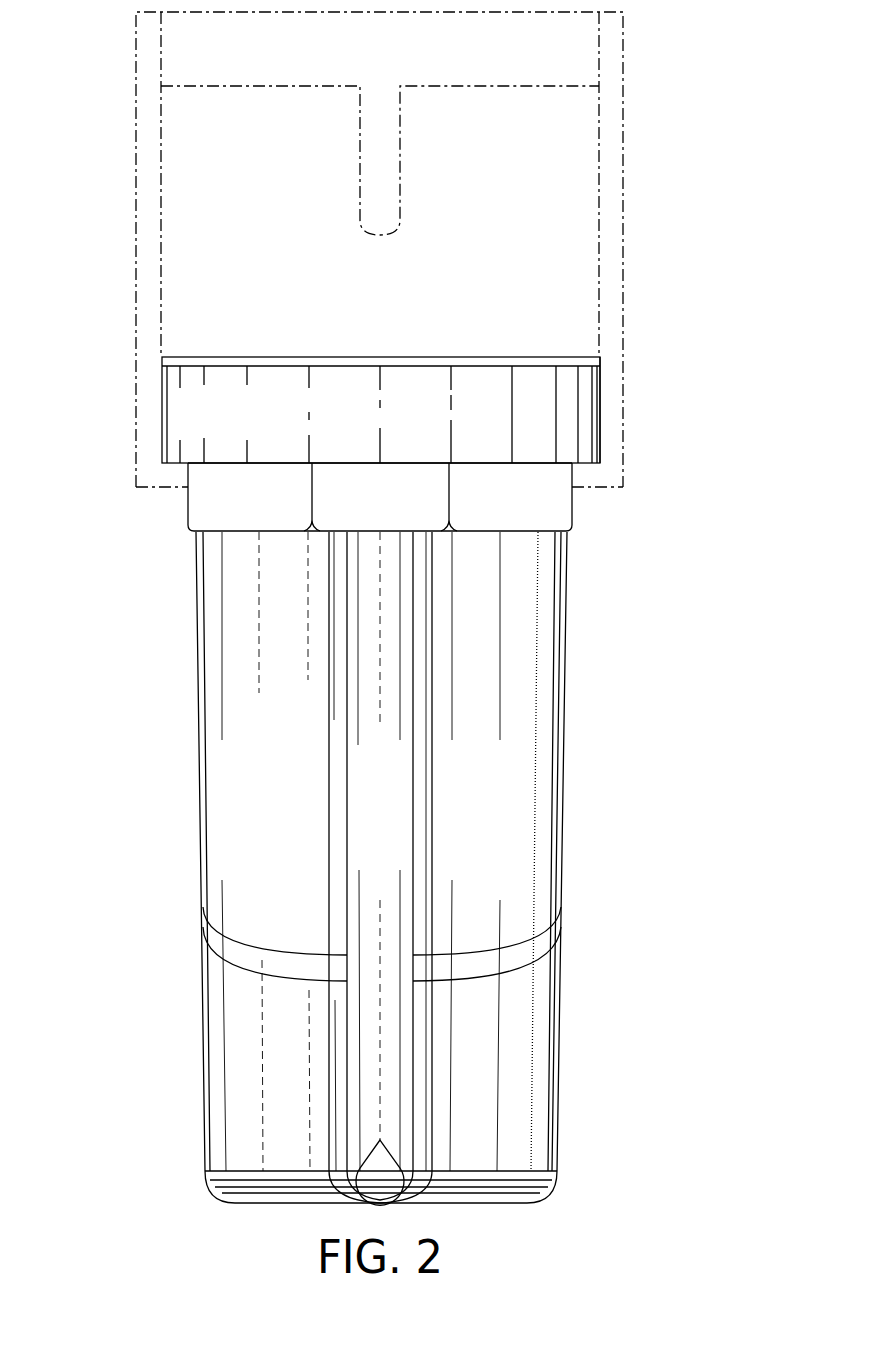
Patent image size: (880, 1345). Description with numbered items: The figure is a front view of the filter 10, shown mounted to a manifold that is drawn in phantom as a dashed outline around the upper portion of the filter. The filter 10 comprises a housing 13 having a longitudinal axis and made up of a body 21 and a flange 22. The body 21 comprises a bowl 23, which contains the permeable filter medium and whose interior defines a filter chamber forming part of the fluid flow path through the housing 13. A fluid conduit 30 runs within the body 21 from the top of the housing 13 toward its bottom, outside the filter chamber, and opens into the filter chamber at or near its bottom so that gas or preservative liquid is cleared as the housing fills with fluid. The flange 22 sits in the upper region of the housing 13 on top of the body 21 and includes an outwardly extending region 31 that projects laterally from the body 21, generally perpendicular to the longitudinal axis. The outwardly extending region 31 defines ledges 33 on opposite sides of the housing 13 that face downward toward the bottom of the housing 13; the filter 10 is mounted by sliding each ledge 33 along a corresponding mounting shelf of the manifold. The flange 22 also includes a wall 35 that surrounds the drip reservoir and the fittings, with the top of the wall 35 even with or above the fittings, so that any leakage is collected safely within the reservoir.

The filter 10 is at (668, 663).
The housing 13 is at (240, 636).
The body 21 is at (250, 735).
The flange 22 is at (188, 420).
The bowl 23 is at (247, 855).
The fluid conduit 30 is at (393, 828).
The outwardly extending region 31 is at (600, 427).
The ledge 33 is at (172, 463).
The wall 35 is at (570, 395).